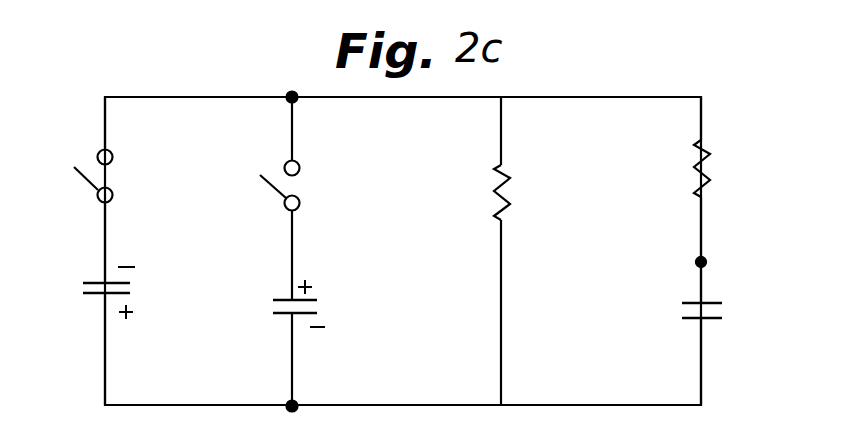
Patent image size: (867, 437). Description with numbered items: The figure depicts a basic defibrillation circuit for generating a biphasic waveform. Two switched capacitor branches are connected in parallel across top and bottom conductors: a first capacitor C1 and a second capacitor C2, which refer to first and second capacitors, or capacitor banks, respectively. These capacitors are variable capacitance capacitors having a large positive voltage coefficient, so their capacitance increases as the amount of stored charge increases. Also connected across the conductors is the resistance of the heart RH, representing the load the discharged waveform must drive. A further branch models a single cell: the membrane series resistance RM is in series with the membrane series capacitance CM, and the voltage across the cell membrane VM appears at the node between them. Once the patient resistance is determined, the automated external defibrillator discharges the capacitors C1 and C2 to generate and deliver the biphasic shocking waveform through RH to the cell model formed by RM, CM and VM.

The first capacitor C1 is at (89, 289).
The second capacitor C2 is at (279, 303).
The resistance of the heart RH is at (524, 192).
The membrane series resistance RM is at (723, 147).
The voltage across the cell membrane VM is at (723, 267).
The membrane series capacitance CM is at (725, 320).